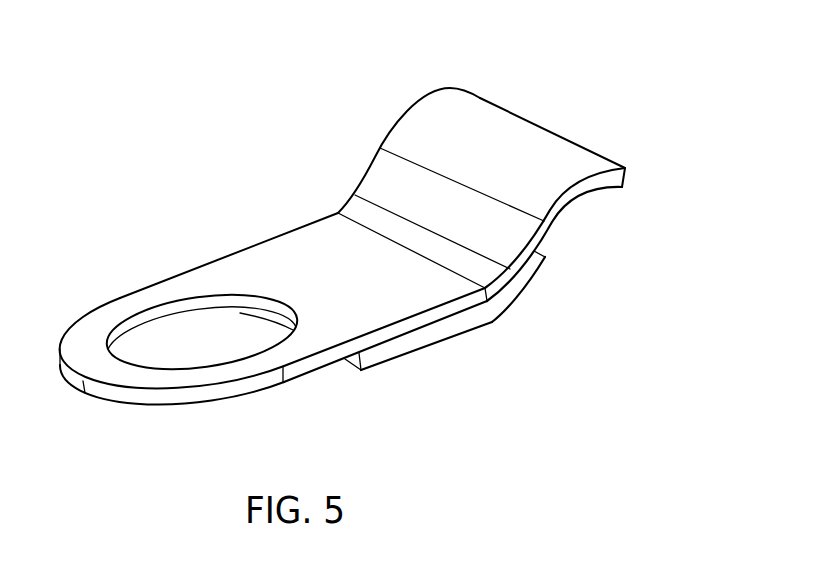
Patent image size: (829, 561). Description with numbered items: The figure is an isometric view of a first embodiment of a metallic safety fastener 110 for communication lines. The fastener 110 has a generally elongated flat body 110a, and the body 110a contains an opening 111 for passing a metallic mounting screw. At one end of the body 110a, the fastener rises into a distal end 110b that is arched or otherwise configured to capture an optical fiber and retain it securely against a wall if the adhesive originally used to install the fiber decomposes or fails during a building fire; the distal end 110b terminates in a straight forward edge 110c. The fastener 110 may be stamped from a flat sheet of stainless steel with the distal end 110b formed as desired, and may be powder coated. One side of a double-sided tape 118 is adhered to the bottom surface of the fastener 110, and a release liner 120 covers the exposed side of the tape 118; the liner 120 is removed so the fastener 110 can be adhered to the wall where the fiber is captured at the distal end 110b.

The safety fastener 110 is at (249, 224).
The body 110a is at (310, 343).
The distal end 110b is at (573, 152).
The straight forward edge 110c is at (503, 105).
The opening 111 is at (147, 320).
The double-sided tape 118 is at (497, 306).
The release liner 120 is at (432, 343).